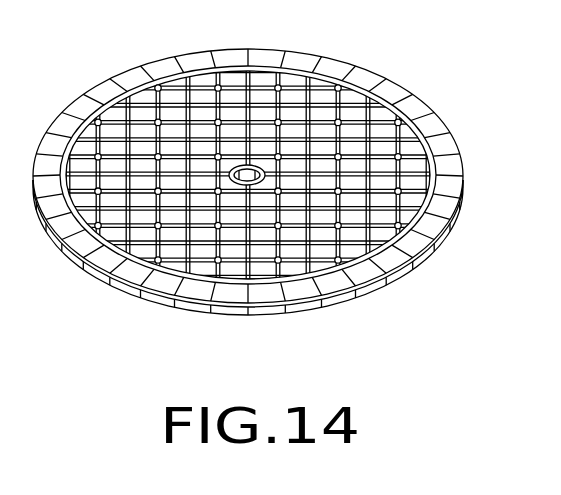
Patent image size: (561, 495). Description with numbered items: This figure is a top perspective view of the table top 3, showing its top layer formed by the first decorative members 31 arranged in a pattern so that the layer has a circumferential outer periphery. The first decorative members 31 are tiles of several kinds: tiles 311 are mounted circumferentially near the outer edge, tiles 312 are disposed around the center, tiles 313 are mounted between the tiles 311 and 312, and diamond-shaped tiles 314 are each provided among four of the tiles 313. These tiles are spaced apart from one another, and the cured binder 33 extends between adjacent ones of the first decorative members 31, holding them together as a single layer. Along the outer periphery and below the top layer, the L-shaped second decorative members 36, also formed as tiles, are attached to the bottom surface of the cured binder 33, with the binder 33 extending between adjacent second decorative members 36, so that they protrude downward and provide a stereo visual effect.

The table top 3 is at (524, 88).
The first decorative members 31 is at (387, 118).
The tiles 311 is at (112, 280).
The tiles 312 is at (227, 170).
The tiles 313 is at (322, 94).
The diamond-shaped tiles 314 is at (405, 188).
The binder 33 is at (417, 258).
The second decorative members 36 is at (302, 305).